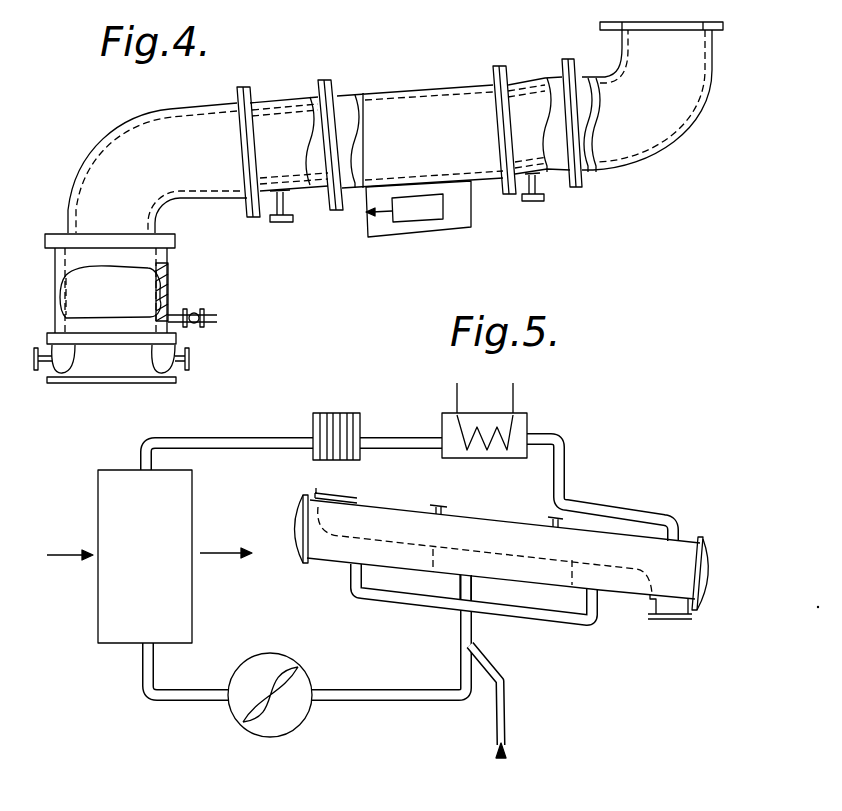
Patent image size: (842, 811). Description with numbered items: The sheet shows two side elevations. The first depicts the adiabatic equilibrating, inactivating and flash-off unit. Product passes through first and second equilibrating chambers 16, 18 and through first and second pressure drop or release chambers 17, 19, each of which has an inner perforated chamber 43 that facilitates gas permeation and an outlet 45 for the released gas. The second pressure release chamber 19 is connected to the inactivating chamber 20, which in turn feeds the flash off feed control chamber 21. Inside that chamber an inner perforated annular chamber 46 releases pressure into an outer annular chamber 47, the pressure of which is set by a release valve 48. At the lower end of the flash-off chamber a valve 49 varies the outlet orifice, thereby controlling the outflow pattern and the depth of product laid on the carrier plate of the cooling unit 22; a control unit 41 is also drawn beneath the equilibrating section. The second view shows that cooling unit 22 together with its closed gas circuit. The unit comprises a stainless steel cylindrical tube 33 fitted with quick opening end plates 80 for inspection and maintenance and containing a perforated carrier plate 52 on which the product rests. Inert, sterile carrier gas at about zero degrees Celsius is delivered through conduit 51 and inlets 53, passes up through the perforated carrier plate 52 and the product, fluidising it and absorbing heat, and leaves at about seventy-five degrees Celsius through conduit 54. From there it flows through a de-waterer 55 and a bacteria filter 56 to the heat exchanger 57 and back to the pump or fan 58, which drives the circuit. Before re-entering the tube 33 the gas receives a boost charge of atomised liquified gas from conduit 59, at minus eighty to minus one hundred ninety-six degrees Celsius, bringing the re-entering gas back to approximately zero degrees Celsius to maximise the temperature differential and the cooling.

In FIG. 4, the first equilibrating chamber 16 is at (643, 138).
In FIG. 4, the first pressure drop or release chamber 17 is at (527, 78).
In FIG. 4, the second equilibrating chamber 18 is at (463, 87).
In FIG. 4, the second pressure drop or release chamber 19 is at (302, 98).
In FIG. 4, the inactivating chamber 20 is at (118, 137).
In FIG. 4, the flash off feed control chamber 21 is at (172, 250).
In FIG. 5, the cooling unit 22 is at (469, 519).
In FIG. 5, the stainless steel cylindrical tube 33 is at (397, 511).
In FIG. 4, the control unit 41 is at (437, 215).
In FIG. 4, the inner perforated chamber 43 is at (272, 110).
In FIG. 4, the outlets 45 is at (283, 222).
In FIG. 4, the inner perforated annular chamber 46 is at (142, 268).
In FIG. 4, the outer annular chamber 47 is at (170, 297).
In FIG. 4, the release valve 48 is at (194, 329).
In FIG. 4, the valve 49 is at (139, 368).
In FIG. 5, the conduit 51 is at (435, 608).
In FIG. 5, the perforated carrier plate 52 is at (528, 558).
In FIG. 5, the inlets 53 is at (353, 572).
In FIG. 5, the conduit 54 is at (680, 523).
In FIG. 5, the de-waterer 55 is at (527, 415).
In FIG. 5, the bacteria filter 56 is at (350, 413).
In FIG. 5, the heat exchanger 57 is at (108, 505).
In FIG. 5, the pump or fan 58 is at (300, 683).
In FIG. 5, the conduit 59 is at (505, 760).
In FIG. 5, the quick opening end plates 80 is at (297, 545).